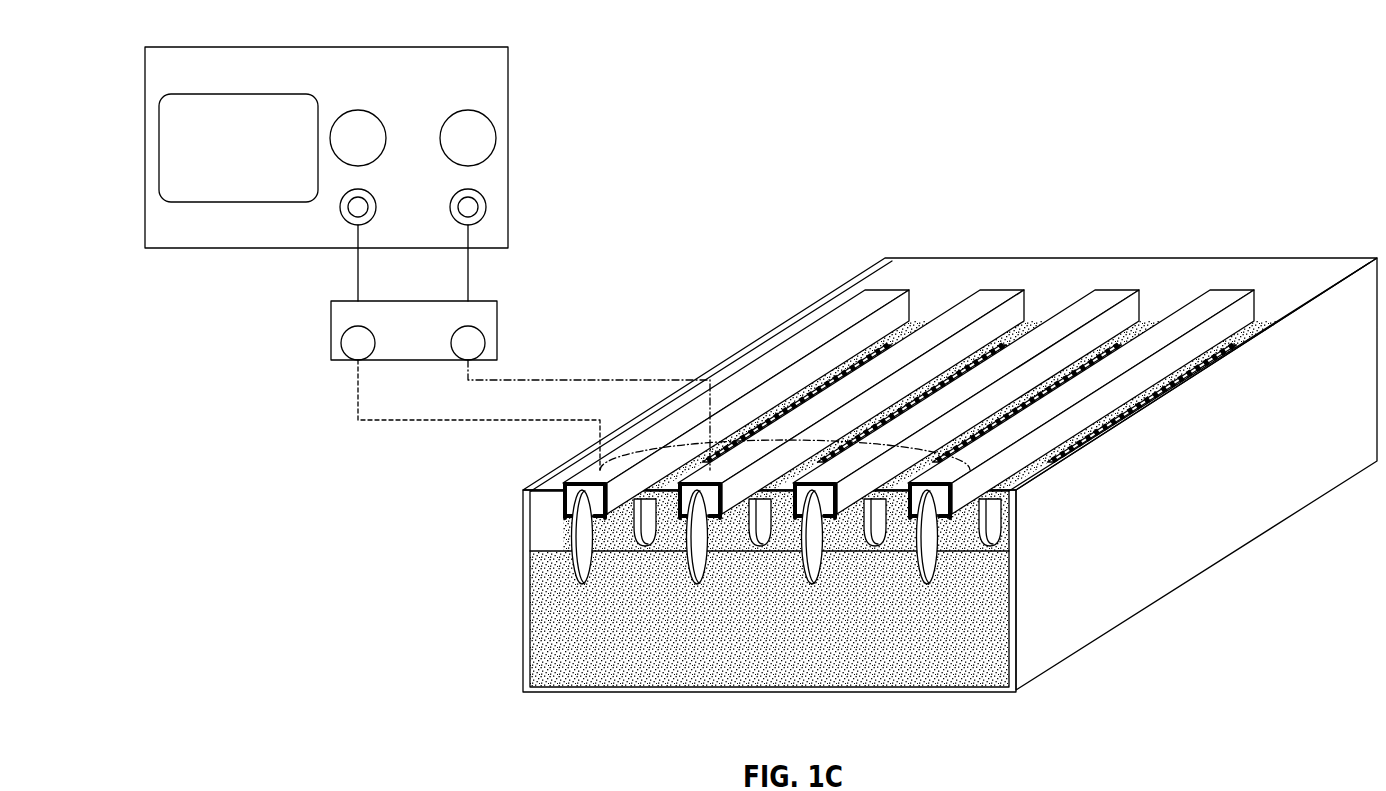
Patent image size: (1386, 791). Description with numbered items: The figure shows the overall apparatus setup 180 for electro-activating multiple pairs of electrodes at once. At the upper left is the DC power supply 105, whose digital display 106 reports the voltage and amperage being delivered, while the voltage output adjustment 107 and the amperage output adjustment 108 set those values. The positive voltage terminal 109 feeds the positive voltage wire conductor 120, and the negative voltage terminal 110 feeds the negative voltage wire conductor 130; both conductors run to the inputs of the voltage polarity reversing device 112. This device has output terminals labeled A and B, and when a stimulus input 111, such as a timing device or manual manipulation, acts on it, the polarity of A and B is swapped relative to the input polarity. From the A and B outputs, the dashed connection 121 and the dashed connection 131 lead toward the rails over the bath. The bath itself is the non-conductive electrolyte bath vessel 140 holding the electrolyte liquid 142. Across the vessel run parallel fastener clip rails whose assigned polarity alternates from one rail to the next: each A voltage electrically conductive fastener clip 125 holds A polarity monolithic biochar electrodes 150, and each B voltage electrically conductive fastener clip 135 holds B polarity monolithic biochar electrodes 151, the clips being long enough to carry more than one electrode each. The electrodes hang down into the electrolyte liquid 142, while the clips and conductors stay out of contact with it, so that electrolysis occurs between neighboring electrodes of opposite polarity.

The DC power supply 105 is at (508, 147).
The digital display 106 is at (168, 152).
The voltage output adjustment 107 is at (358, 110).
The amperage output adjustment 108 is at (468, 110).
The positive voltage terminal 109 is at (340, 208).
The negative voltage terminal 110 is at (487, 207).
The stimulus input 111 is at (502, 322).
The voltage polarity reversing device 112 is at (331, 320).
The positive voltage wire conductor 120 is at (358, 272).
The anode wiring 121 is at (438, 422).
The A voltage electrically conductive fastener clip 125 is at (853, 312).
The negative voltage wire conductor 130 is at (468, 272).
The cathode wiring 131 is at (600, 380).
The B voltage electrically conductive fastener clip 135 is at (995, 297).
The electrolyte bath vessel 140 is at (522, 605).
The electrolyte liquid 142 is at (577, 677).
The A polarity monolithic biochar electrode 150 is at (578, 538).
The B polarity monolithic biochar electrode 151 is at (697, 586).
The overall apparatus setup for multiple pairs of electrodes 180 is at (905, 143).